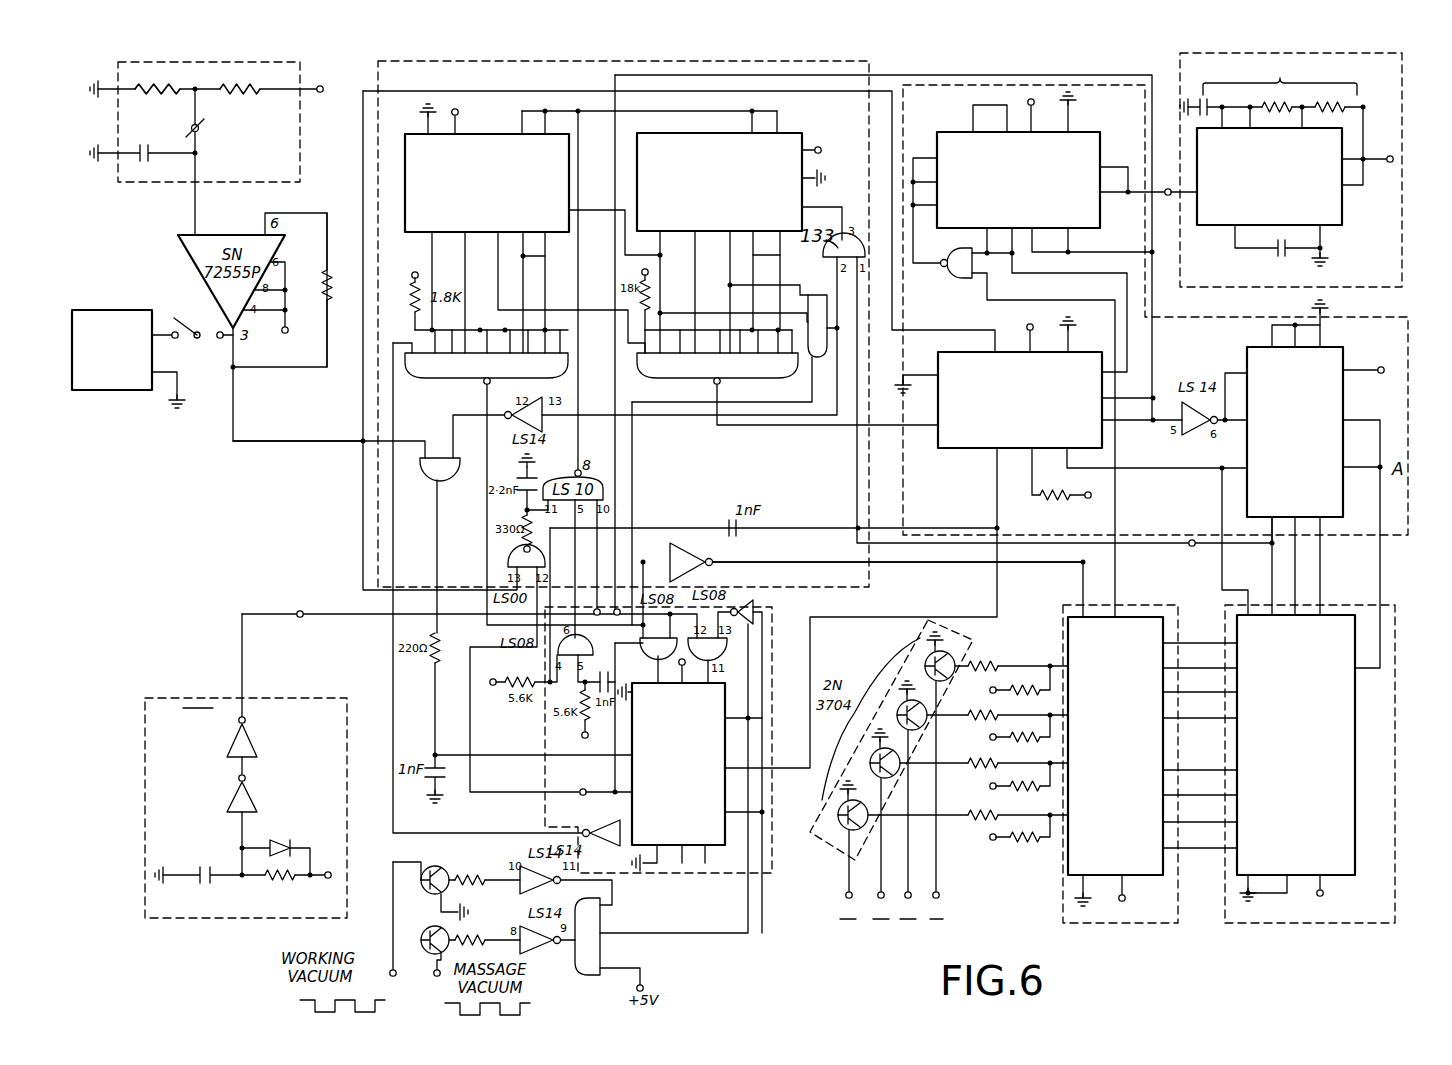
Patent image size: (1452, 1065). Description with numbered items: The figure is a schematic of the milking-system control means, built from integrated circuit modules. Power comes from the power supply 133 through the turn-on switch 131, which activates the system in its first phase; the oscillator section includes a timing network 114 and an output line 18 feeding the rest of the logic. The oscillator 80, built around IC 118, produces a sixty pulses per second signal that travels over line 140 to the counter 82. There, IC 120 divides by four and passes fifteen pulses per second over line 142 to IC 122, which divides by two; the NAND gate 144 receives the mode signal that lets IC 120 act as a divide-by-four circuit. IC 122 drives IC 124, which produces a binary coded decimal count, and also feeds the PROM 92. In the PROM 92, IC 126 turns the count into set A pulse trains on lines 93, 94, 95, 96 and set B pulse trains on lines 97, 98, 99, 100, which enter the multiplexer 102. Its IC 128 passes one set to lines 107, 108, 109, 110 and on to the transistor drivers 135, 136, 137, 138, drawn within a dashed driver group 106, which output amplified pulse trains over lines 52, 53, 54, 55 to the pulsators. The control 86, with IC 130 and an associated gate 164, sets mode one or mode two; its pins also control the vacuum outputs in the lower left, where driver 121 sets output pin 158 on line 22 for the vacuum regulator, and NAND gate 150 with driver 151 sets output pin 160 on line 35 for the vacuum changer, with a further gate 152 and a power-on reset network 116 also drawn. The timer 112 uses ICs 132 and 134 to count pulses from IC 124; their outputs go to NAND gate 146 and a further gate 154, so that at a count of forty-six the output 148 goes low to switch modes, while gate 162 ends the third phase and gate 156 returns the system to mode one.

The RC timing network for SN72555P oscillator 114 is at (175, 195).
The turn-on switch 131 is at (177, 322).
The power supply 133 is at (130, 392).
The pulse output line of oscillator 18 is at (252, 368).
The timer 112 is at (378, 480).
The counter IC of the timer 132 is at (487, 192).
The counter IC of the timer 134 is at (719, 192).
The gate 162 is at (425, 386).
The gate 156 is at (442, 469).
The output of NAND gate 146 148 is at (722, 388).
The NAND gate 146 is at (770, 389).
The LS10 NAND gate 154 is at (820, 292).
The NAND gate 144 is at (957, 282).
The counter IC 120 is at (1088, 136).
The line 140 is at (1150, 188).
The oscillator IC 118 is at (1291, 170).
The oscillator 80 is at (1400, 160).
The line 142 is at (1145, 343).
The counter IC 122 is at (950, 355).
The counter IC 124 is at (1343, 397).
The counter 82 is at (1408, 445).
The control 86 is at (545, 740).
The LS08 AND gate 164 is at (645, 637).
The control IC 130 is at (678, 764).
The power-on reset circuit 116 is at (154, 814).
The line 22 is at (393, 915).
The driver 121 is at (448, 871).
The output pin 158 is at (390, 968).
The output pin 160 is at (448, 957).
The driver 151 is at (420, 946).
The line 35 is at (420, 982).
The NAND gate 150 is at (604, 932).
The gate output 152 is at (585, 978).
The 2N3704 transistor 106 is at (975, 648).
The transistor driver 135 is at (957, 636).
The transistor driver 136 is at (898, 712).
The transistor driver 137 is at (870, 763).
The transistor driver 138 is at (840, 824).
The line 107 is at (1020, 668).
The line 108 is at (1030, 718).
The line 109 is at (1030, 766).
The line 110 is at (1030, 814).
The line 52 is at (846, 870).
The line 53 is at (878, 870).
The line 54 is at (907, 870).
The line 55 is at (938, 870).
The multiplexer IC 128 is at (1116, 746).
The multiplexer 102 is at (1130, 923).
The PROM IC 126 is at (1296, 745).
The PROM 92 is at (1395, 700).
The line 93 is at (1183, 643).
The line 94 is at (1185, 668).
The line 95 is at (1185, 692).
The line 96 is at (1185, 718).
The line 97 is at (1185, 770).
The line 98 is at (1185, 795).
The line 99 is at (1185, 822).
The line 100 is at (1181, 848).